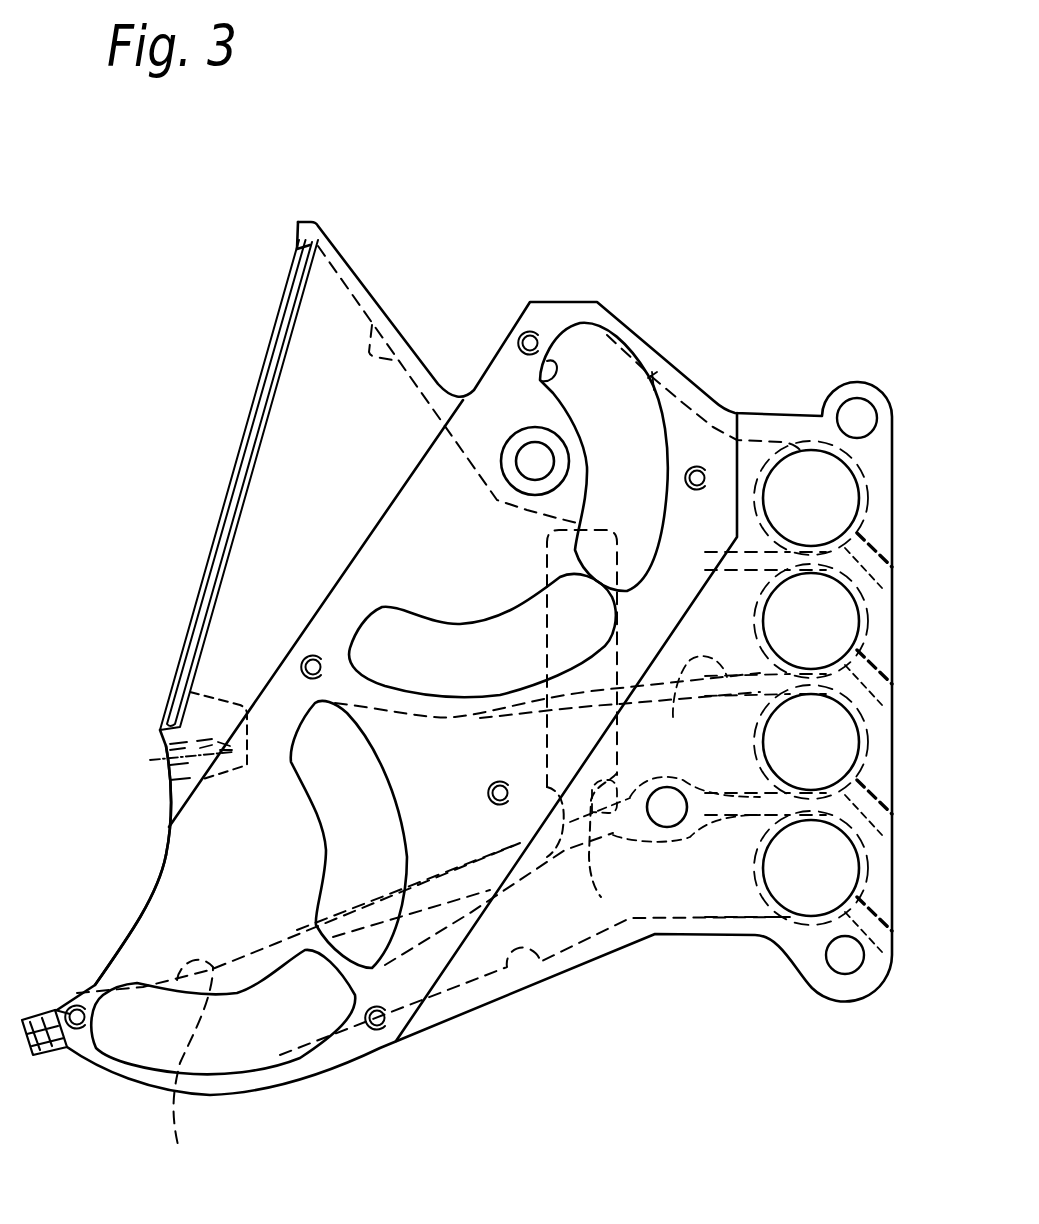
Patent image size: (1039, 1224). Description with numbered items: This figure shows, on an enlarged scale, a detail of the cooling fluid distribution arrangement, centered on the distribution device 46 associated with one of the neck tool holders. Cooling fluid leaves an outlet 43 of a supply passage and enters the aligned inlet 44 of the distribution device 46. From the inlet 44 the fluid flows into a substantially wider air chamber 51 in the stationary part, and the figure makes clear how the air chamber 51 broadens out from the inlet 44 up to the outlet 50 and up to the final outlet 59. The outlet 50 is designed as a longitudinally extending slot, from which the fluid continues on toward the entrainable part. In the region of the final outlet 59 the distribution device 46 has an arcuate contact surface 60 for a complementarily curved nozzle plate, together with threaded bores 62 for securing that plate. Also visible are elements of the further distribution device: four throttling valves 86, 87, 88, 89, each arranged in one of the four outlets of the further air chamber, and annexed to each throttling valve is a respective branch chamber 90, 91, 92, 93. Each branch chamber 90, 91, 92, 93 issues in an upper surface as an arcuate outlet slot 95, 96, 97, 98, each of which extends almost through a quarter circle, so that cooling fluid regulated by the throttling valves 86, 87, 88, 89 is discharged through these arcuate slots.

The distribution device 46 is at (360, 245).
The outlet 50 is at (283, 287).
The air chamber 51 is at (386, 312).
The branch chamber 93 is at (650, 373).
The arcuate outlet slot 98 is at (541, 381).
The throttling valve 89 is at (798, 432).
The throttling valve 88 is at (740, 622).
The throttling valve 86 is at (742, 762).
The throttling valve 87 is at (750, 908).
The arcuate outlet slot 97 is at (457, 622).
The arcuate outlet slot 95 is at (305, 735).
The arcuate outlet slot 96 is at (102, 1050).
The branch chamber 90 is at (493, 717).
The branch chamber 92 is at (686, 749).
The inlet 44 is at (563, 852).
The outlet 43 is at (603, 845).
The branch chamber 91 is at (553, 975).
The threaded bore 62 is at (165, 760).
The final outlet 59 is at (170, 793).
The arcuate contact surface 60 is at (160, 870).